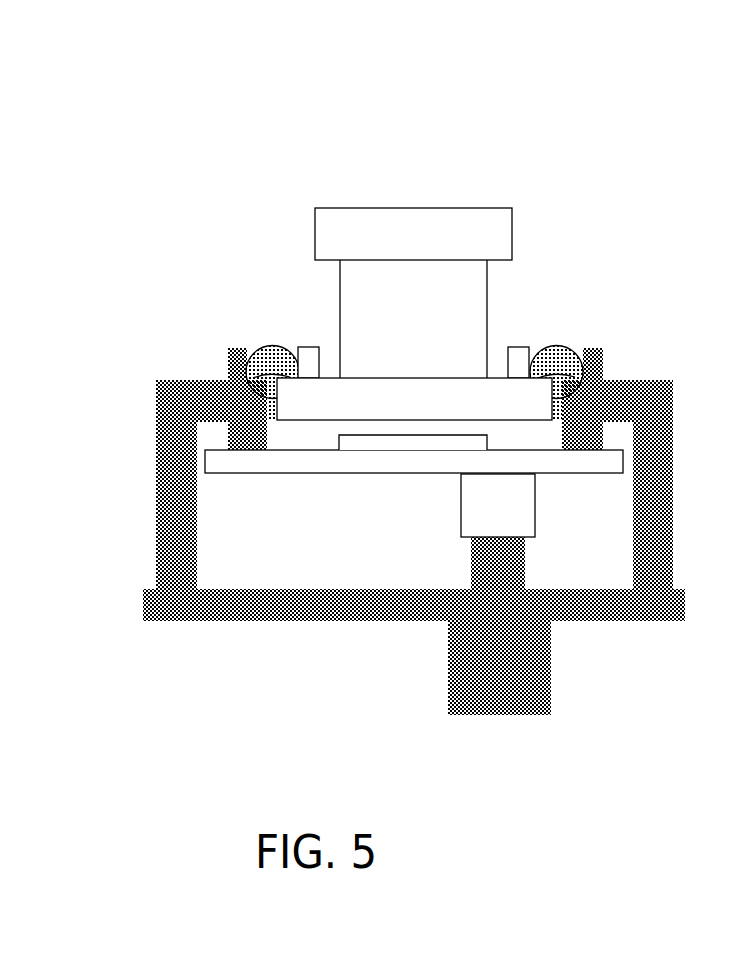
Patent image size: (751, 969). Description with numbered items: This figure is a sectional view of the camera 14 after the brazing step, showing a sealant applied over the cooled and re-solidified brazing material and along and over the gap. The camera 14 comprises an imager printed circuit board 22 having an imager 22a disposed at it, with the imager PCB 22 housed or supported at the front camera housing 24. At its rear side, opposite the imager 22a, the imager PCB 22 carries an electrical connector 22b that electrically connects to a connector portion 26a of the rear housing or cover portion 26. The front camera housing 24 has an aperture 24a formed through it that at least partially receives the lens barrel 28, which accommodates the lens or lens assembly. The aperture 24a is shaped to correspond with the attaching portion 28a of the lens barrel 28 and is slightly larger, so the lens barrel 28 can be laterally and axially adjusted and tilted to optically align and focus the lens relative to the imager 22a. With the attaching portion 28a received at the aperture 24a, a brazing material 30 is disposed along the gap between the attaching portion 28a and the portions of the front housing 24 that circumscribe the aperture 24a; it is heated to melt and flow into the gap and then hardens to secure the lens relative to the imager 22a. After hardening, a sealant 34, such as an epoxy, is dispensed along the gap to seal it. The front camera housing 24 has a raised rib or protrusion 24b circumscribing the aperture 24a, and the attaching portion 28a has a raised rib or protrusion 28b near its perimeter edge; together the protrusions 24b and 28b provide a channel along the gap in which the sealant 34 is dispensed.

The camera 14 is at (563, 217).
The imager printed circuit board 22 is at (285, 460).
The imager 22a is at (413, 435).
The electrical connector 22b is at (503, 497).
The front camera housing 24 is at (200, 398).
The aperture 24a is at (273, 410).
The raised rib or protrusion 24b is at (237, 355).
The rear housing or cover portion 26 is at (298, 595).
The connector portion 26a is at (488, 668).
The lens barrel 28 is at (418, 170).
The attaching portion 28a is at (353, 387).
The raised rib or protrusion 28b is at (305, 350).
The brazing material 30 is at (570, 377).
The sealant 34 is at (553, 347).